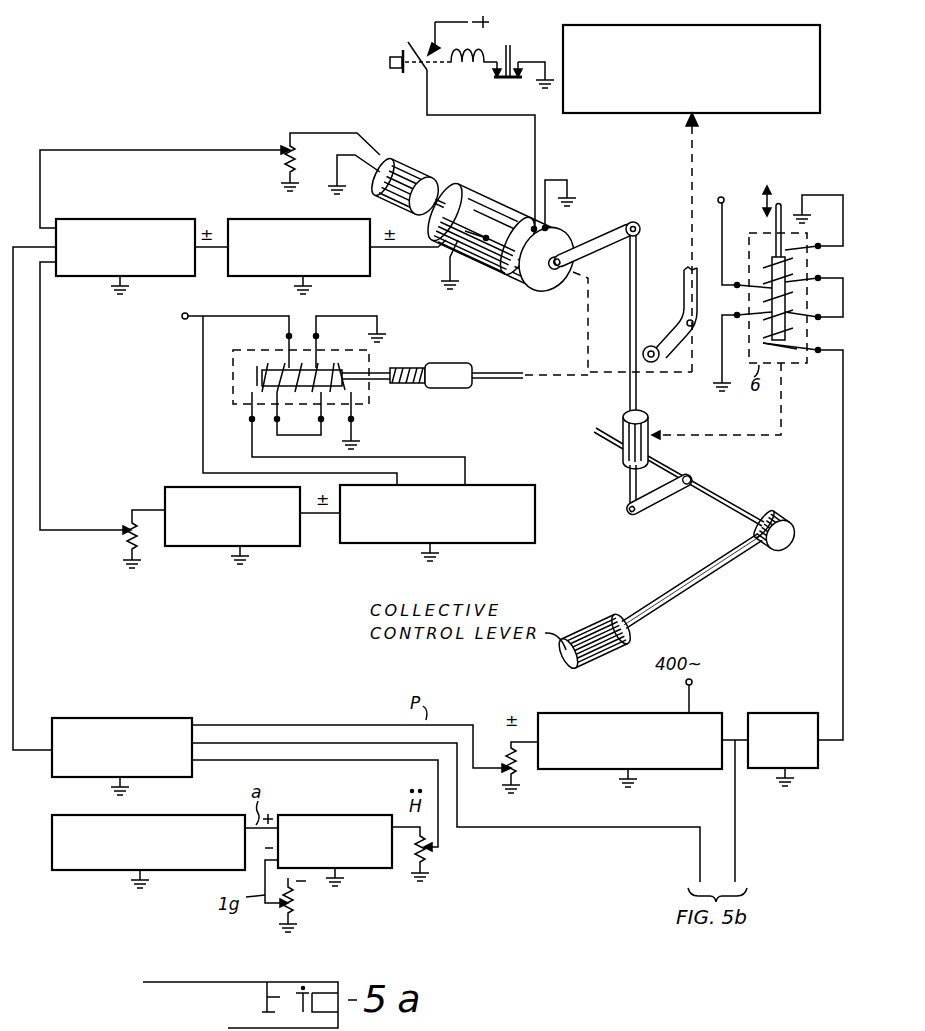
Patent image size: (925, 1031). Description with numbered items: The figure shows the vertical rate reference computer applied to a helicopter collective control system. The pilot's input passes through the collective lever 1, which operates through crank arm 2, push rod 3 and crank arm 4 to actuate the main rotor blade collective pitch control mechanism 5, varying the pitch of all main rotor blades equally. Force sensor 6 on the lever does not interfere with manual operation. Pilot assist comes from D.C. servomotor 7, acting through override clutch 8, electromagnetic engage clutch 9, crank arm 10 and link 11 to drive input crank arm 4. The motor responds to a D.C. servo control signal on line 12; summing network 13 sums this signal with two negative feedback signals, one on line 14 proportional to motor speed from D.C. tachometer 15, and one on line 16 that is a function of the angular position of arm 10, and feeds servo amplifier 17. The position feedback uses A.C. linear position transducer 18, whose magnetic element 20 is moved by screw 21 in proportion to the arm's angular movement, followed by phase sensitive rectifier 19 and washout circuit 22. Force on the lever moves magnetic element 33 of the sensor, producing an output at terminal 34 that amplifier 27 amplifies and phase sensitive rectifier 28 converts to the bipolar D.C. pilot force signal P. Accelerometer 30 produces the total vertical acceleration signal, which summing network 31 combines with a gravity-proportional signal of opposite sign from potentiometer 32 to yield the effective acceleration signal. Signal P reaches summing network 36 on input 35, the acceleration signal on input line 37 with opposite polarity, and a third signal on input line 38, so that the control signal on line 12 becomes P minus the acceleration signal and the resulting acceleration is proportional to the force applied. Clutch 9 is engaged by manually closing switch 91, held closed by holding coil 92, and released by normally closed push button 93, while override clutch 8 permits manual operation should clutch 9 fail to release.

The collective lever 1 is at (655, 608).
The crank arm 2 is at (666, 500).
The push rod 3 is at (624, 487).
The crank arm 4 is at (662, 338).
The main rotor blade collective pitch control mechanism 5 is at (760, 114).
The force sensor 6 is at (620, 423).
The D.C. servomotor 7 is at (501, 195).
The override clutch 8 is at (507, 268).
The electromagnetic engage clutch 9 is at (520, 276).
The crank arm 10 is at (604, 235).
The link 11 is at (639, 284).
The line 12 is at (14, 615).
The summing network 13 is at (161, 218).
The line 14 is at (190, 150).
The D.C. tachometer 15 is at (426, 160).
The line 16 is at (41, 428).
The servo amplifier 17 is at (327, 219).
The A.C. linear position transducer 18 is at (248, 355).
The phase sensitive rectifier 19 is at (516, 488).
The magnetic element 20 is at (287, 386).
The screw 21 is at (406, 368).
The washout circuit 22 is at (179, 488).
The amplifier 27 is at (794, 711).
The phase sensitive rectifier 28 is at (618, 712).
The accelerometer 30 is at (74, 814).
The summing network 31 is at (377, 870).
The potentiometer 32 is at (306, 907).
The magnetic element 33 is at (787, 272).
The terminal 34 is at (824, 357).
The input 35 is at (307, 722).
The summing network 36 is at (130, 716).
The input line 37 is at (227, 766).
The input line 38 is at (700, 858).
The switch 91 is at (418, 70).
The holding coil 92 is at (469, 70).
The push button 93 is at (509, 46).